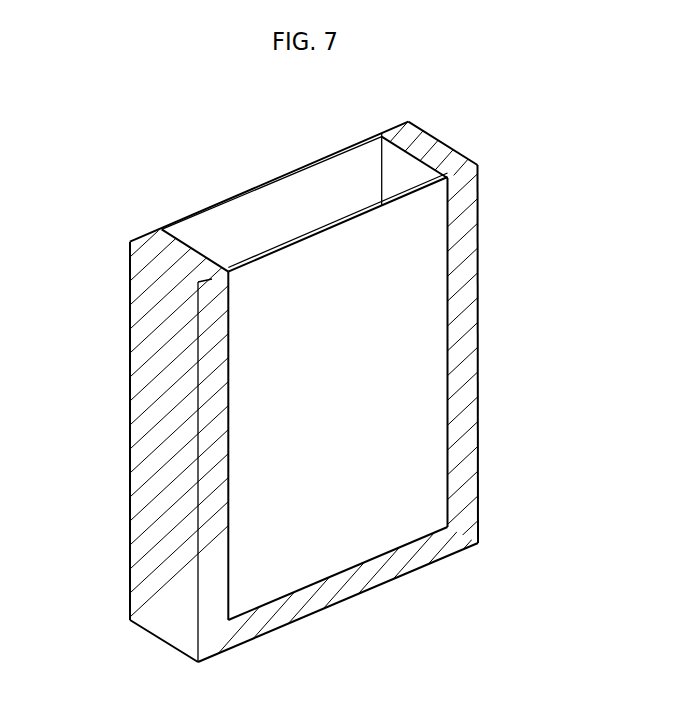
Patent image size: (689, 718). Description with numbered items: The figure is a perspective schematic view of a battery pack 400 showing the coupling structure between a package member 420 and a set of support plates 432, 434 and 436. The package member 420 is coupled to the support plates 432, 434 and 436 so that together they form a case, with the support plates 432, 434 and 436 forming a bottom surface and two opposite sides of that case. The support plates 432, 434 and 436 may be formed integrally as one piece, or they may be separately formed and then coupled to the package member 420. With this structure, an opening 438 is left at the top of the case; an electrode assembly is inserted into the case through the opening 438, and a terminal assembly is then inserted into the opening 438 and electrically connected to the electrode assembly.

The battery pack 400 is at (80, 142).
The support plate 432 is at (157, 385).
The support plate 434 is at (468, 279).
The support plate 436 is at (350, 585).
The opening 438 is at (343, 213).
The package member 420 is at (418, 403).